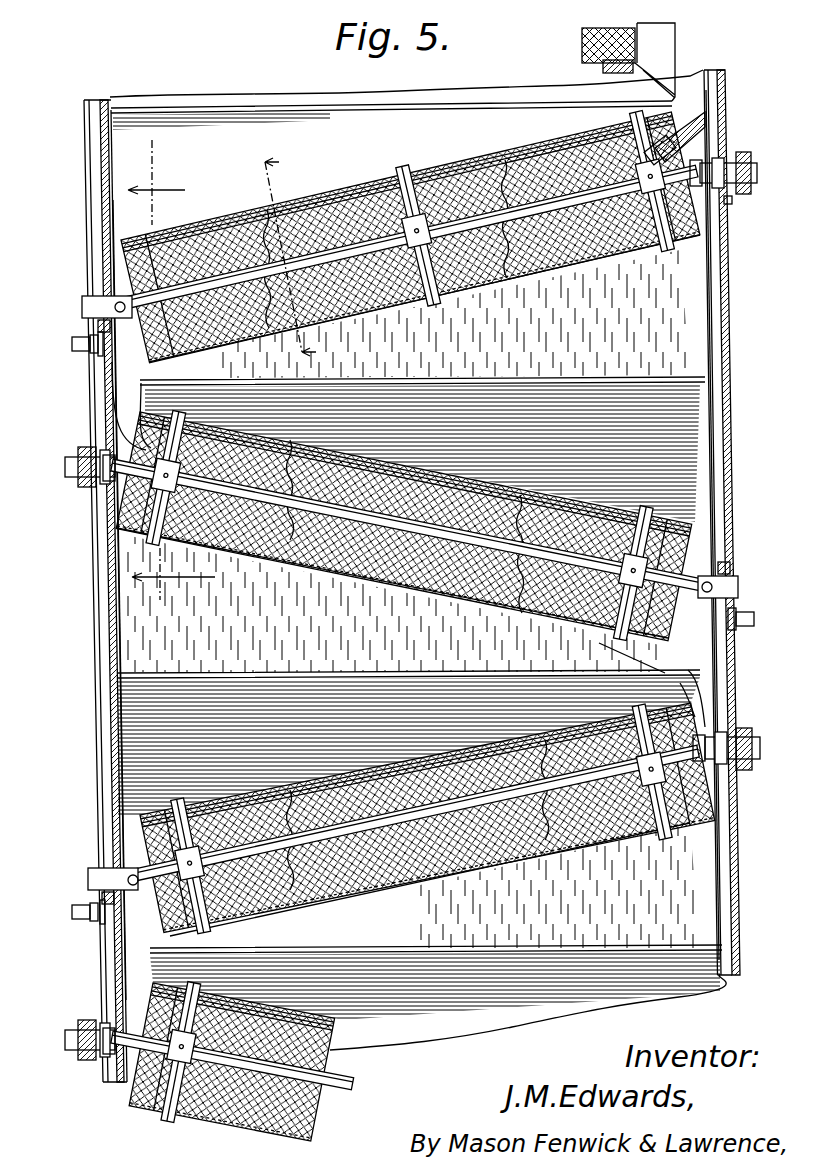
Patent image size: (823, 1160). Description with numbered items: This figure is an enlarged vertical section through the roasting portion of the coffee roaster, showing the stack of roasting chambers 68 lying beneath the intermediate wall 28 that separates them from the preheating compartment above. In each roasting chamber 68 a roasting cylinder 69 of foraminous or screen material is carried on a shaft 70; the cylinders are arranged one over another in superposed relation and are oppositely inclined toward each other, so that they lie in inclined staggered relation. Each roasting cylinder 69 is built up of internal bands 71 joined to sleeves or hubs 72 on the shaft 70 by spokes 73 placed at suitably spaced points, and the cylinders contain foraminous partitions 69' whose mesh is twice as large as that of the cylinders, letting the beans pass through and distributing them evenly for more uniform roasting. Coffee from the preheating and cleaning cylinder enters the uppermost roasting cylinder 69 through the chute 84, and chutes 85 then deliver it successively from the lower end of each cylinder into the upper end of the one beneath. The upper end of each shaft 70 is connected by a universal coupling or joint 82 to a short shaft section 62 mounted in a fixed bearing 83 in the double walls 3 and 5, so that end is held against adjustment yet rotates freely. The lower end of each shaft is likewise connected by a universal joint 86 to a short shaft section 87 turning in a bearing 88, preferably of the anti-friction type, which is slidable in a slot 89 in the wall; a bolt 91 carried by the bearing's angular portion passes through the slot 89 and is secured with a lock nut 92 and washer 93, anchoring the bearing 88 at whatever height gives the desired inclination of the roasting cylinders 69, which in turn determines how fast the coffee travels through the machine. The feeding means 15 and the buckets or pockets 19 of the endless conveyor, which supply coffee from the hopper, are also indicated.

The double wall 3 is at (716, 286).
The double wall 5 is at (105, 610).
The feeding means 15 is at (171, 370).
The buckets or pockets 19 is at (305, 252).
The intermediate wall 28 is at (655, 377).
The short shaft section 62 is at (742, 172).
The roasting chamber 68 is at (366, 146).
The roasting cylinder 69 is at (415, 635).
The foraminous partition 69' is at (408, 676).
The shaft 70 is at (305, 265).
The internal band 71 is at (408, 611).
The sleeve or hub 72 is at (365, 225).
The spoke 73 is at (405, 190).
The universal coupling or joint 82 is at (668, 145).
The bearing 83 is at (730, 200).
The chute 84 is at (695, 100).
The chute 85 is at (120, 390).
The universal joint or coupling 86 is at (97, 322).
The short shaft section 87 is at (80, 305).
The bearing 88 is at (108, 845).
The slot 89 is at (88, 185).
The bolt or fastening 91 is at (72, 343).
The lock nut 92 is at (90, 347).
The washer 93 is at (100, 356).